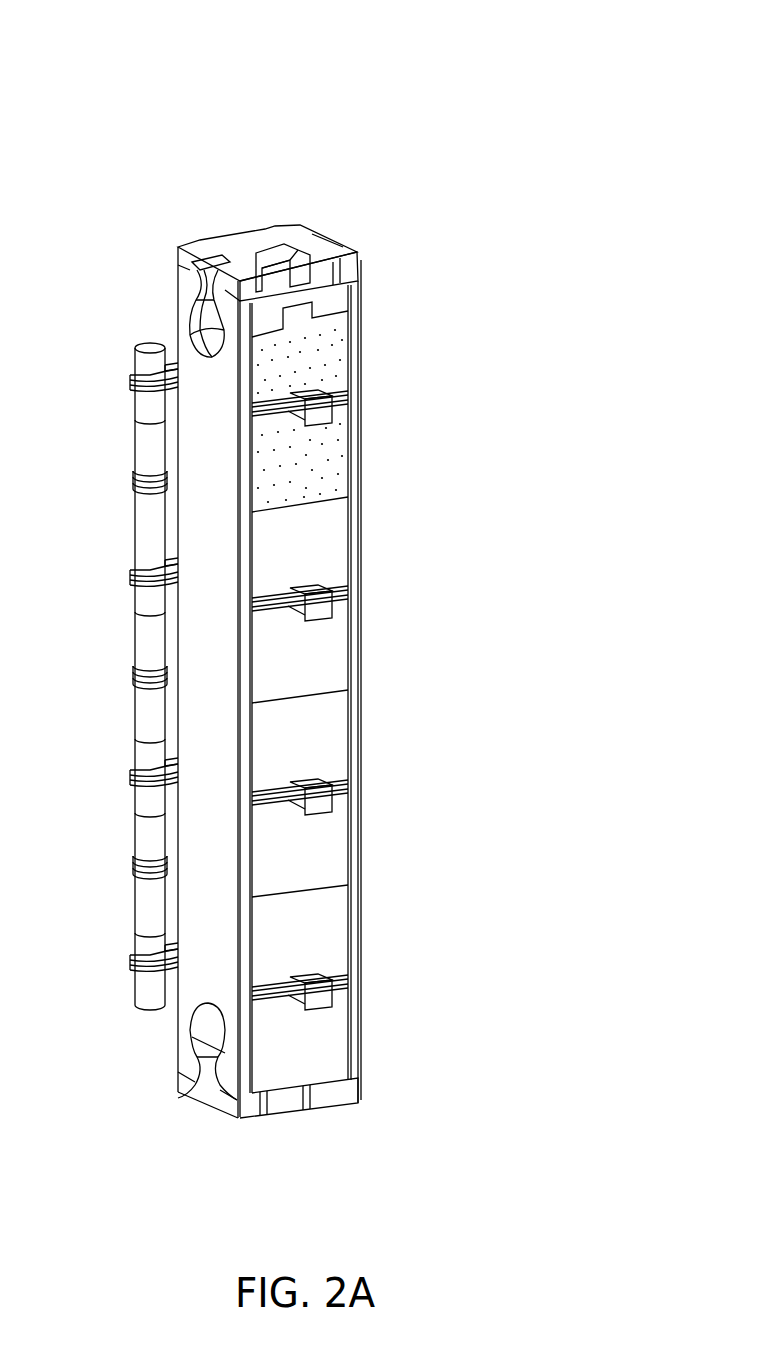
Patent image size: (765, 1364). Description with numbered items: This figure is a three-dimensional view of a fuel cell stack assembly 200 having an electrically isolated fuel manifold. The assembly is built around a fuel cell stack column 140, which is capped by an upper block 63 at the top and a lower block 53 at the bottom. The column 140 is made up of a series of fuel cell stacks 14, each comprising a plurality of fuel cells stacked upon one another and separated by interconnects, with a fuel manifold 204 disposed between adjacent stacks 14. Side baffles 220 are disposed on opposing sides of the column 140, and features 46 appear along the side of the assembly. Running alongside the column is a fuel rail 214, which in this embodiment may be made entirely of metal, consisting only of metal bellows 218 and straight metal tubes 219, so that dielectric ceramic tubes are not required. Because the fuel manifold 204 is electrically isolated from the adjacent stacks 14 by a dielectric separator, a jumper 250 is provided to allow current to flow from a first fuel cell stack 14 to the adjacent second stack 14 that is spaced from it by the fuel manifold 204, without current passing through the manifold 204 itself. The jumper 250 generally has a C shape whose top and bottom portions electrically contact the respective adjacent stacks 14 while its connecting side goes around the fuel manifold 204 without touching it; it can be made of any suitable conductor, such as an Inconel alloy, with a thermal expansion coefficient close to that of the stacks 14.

The fuel cell stack assembly 200 is at (113, 82).
The upper block 63 is at (244, 241).
The hook 46 is at (176, 291).
The side baffle 220 is at (171, 330).
The fuel rail 214 is at (129, 357).
The fuel manifold 204 is at (123, 380).
The straight metal tube 219 is at (131, 445).
The metal bellows 218 is at (129, 482).
The jumper 250 is at (338, 591).
The fuel cell stack column 140 is at (530, 383).
The fuel cell stack 14 is at (321, 1033).
The lower block 53 is at (333, 1123).